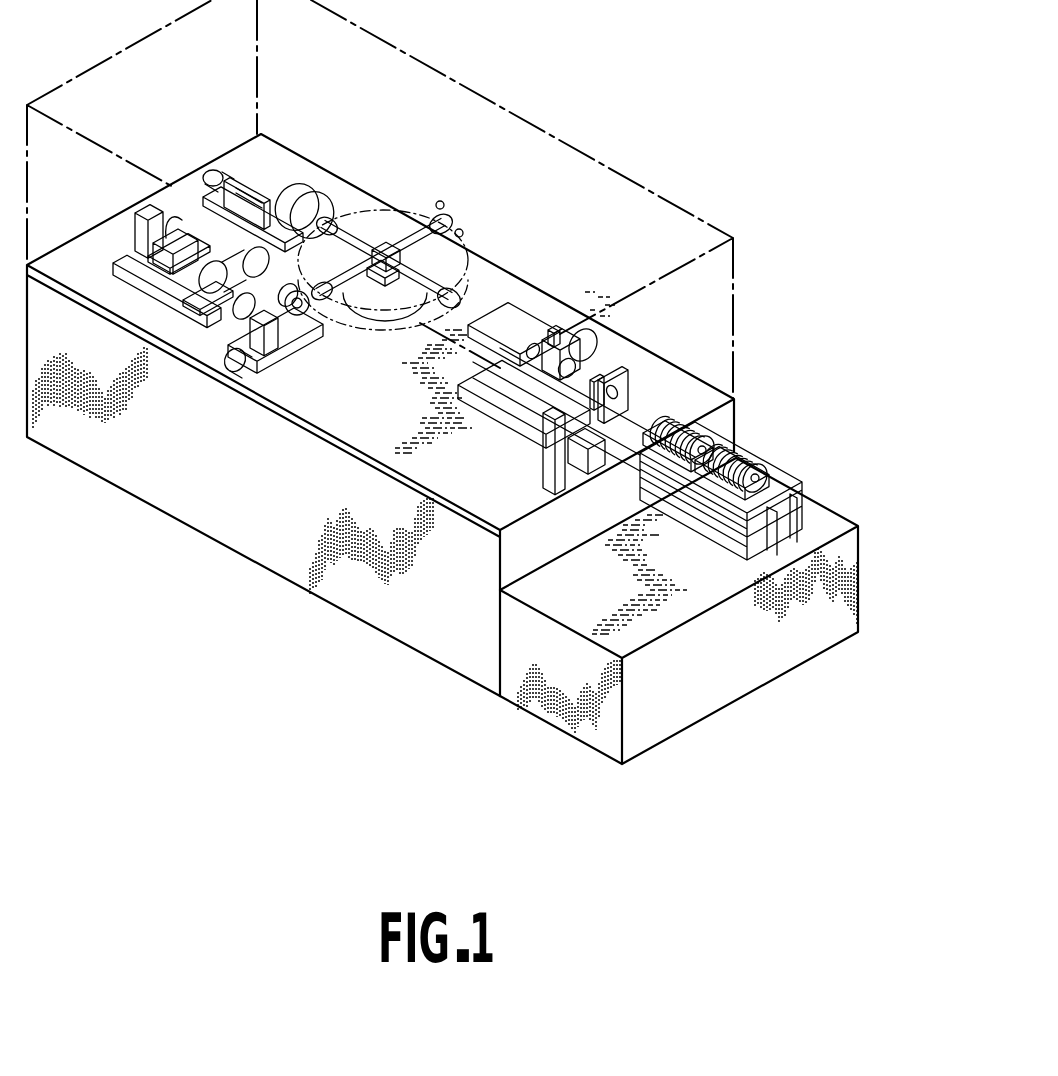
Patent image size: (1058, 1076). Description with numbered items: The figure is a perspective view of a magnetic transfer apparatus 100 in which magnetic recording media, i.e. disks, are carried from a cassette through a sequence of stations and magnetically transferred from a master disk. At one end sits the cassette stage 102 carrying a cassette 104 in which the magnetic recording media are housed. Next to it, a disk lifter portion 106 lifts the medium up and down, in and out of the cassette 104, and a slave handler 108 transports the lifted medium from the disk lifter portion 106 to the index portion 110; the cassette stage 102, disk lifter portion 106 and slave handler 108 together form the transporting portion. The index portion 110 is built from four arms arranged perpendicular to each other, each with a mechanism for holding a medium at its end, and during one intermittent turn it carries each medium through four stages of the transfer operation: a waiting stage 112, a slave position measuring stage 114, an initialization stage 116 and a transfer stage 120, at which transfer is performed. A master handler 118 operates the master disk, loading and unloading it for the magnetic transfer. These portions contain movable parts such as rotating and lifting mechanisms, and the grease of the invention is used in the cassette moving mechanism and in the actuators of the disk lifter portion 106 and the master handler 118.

The magnetic transfer apparatus 100 is at (630, 108).
The cassette stage 102 is at (770, 462).
The cassette 104 is at (738, 447).
The disk lifter portion 106 is at (628, 386).
The slave handler 108 is at (550, 333).
The index portion 110 is at (464, 249).
The waiting stage 112 is at (386, 290).
The slave position measuring stage 114 is at (442, 200).
The initialization stage 116 is at (306, 185).
The master handler 118 is at (290, 366).
The transfer stage 120 is at (278, 362).